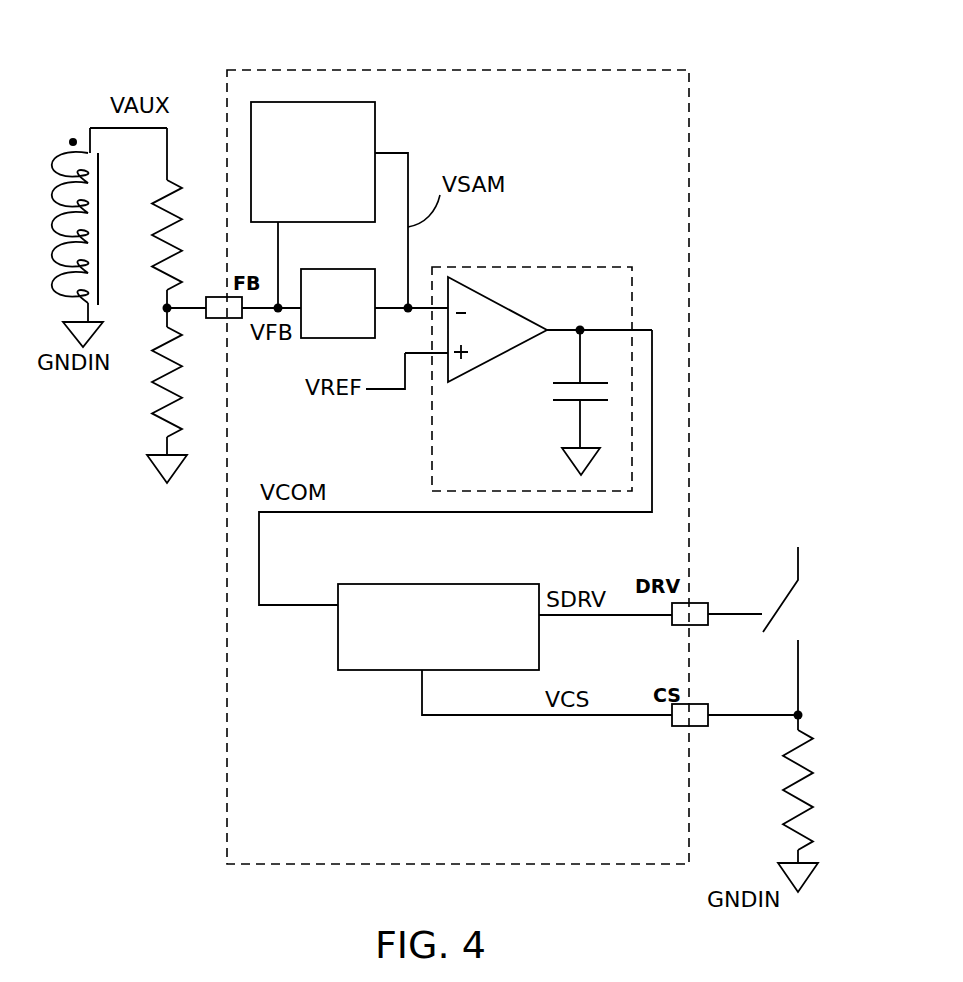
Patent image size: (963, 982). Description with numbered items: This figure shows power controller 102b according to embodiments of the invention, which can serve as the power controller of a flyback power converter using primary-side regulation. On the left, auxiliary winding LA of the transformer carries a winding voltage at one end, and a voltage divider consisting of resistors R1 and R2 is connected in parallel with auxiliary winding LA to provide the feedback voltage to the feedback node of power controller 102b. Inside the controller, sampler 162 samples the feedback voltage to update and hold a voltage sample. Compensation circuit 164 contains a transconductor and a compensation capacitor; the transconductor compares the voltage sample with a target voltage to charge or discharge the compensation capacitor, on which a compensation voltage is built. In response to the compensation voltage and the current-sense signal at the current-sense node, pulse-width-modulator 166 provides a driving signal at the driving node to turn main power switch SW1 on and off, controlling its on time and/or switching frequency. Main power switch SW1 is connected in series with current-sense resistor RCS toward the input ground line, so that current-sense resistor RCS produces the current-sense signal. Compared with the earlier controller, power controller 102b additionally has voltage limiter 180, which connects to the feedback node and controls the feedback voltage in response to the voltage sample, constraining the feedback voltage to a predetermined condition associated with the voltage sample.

The power controller 102b is at (323, 70).
The voltage limiter 180 is at (316, 207).
The sampler 162 is at (317, 321).
The compensation circuit 164 is at (547, 267).
The pulse-width-modulator 166 is at (510, 641).
The auxiliary winding LA is at (62, 249).
The resistor R1 is at (155, 207).
The resistor R2 is at (155, 398).
The main power switch SW1 is at (807, 612).
The current-sense resistor RCS is at (810, 793).